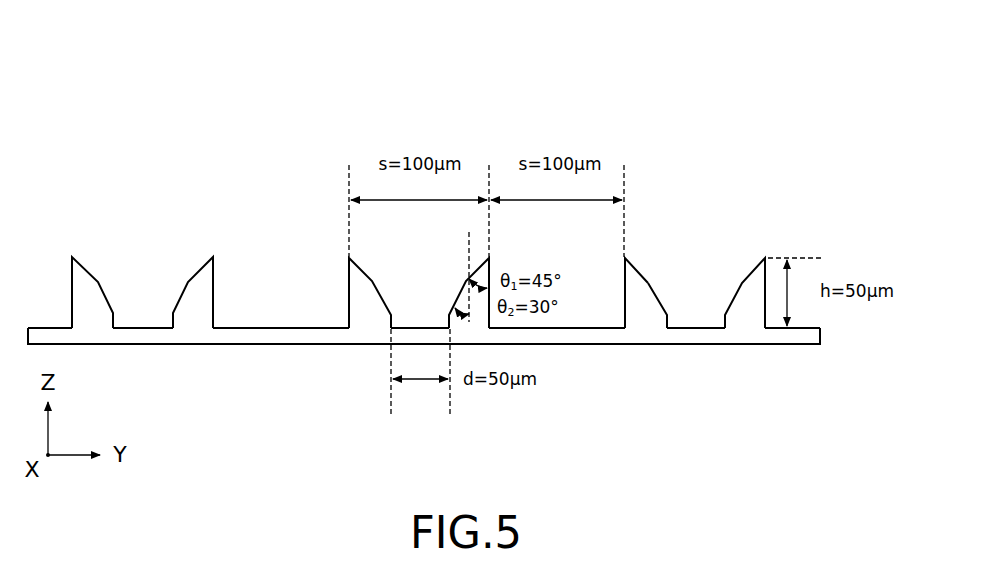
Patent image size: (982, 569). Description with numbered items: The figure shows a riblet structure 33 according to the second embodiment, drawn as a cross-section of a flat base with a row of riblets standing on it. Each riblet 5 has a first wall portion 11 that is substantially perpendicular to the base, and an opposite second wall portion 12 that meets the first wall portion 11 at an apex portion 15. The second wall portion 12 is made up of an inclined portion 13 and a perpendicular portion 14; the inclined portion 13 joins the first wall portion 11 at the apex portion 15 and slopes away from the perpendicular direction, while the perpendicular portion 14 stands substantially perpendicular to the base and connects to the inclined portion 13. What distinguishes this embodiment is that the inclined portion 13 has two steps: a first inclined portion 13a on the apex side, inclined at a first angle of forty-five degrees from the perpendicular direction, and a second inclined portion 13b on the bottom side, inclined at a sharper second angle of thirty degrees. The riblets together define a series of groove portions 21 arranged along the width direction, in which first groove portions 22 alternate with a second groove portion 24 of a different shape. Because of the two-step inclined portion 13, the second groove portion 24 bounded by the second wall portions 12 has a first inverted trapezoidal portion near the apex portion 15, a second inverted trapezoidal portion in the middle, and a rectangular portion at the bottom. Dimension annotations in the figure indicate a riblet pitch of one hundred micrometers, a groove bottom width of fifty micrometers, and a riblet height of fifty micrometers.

The riblet structure 33 is at (482, 80).
The first wall portion 11 is at (622, 290).
The groove portions 21 is at (288, 172).
The second groove portion 24 is at (138, 287).
The first groove portions 22 is at (268, 280).
The riblet 5 is at (380, 264).
The second wall portion 12 is at (665, 120).
The inclined portion 13 is at (633, 172).
The first inclined portion 13a is at (642, 265).
The second inclined portion 13b is at (667, 297).
The perpendicular portion 14 is at (668, 322).
The apex portion 15 is at (766, 255).